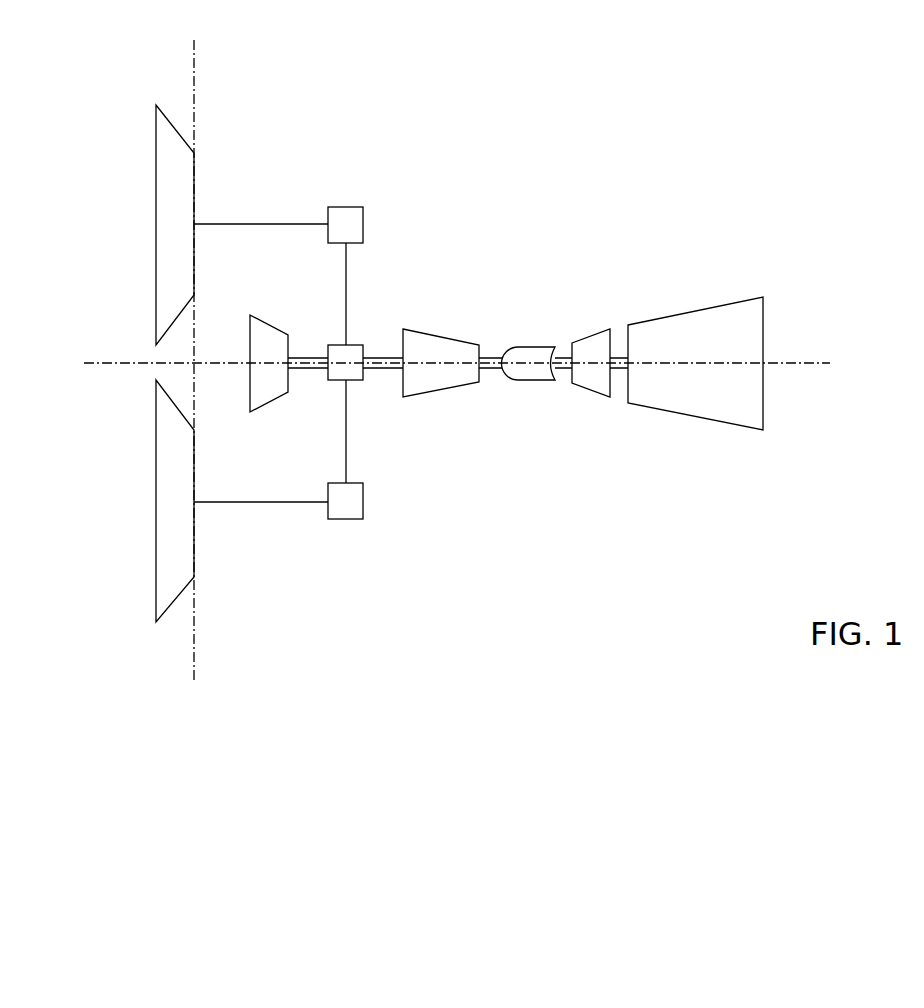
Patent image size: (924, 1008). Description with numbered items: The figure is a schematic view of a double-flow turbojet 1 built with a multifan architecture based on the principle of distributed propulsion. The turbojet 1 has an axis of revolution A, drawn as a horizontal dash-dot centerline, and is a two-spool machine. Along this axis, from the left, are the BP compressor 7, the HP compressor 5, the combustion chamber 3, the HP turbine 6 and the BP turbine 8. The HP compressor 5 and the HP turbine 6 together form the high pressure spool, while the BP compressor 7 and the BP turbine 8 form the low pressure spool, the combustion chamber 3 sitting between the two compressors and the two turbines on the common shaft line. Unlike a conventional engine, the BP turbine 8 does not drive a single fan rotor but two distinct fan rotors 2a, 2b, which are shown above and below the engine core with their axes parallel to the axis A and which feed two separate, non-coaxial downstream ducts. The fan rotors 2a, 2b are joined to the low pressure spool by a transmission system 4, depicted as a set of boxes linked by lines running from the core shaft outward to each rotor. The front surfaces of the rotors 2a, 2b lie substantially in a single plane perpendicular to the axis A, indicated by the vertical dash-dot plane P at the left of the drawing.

The turbojet 1 is at (549, 560).
The fan rotor 2a is at (165, 234).
The fan rotor 2b is at (165, 512).
The combustion chamber 3 is at (529, 332).
The transmission system 4 is at (339, 560).
The HP compressor 5 is at (440, 322).
The HP turbine 6 is at (590, 317).
The BP compressor 7 is at (269, 308).
The BP turbine 8 is at (701, 297).
The axis of revolution A is at (805, 363).
The plane P is at (194, 67).